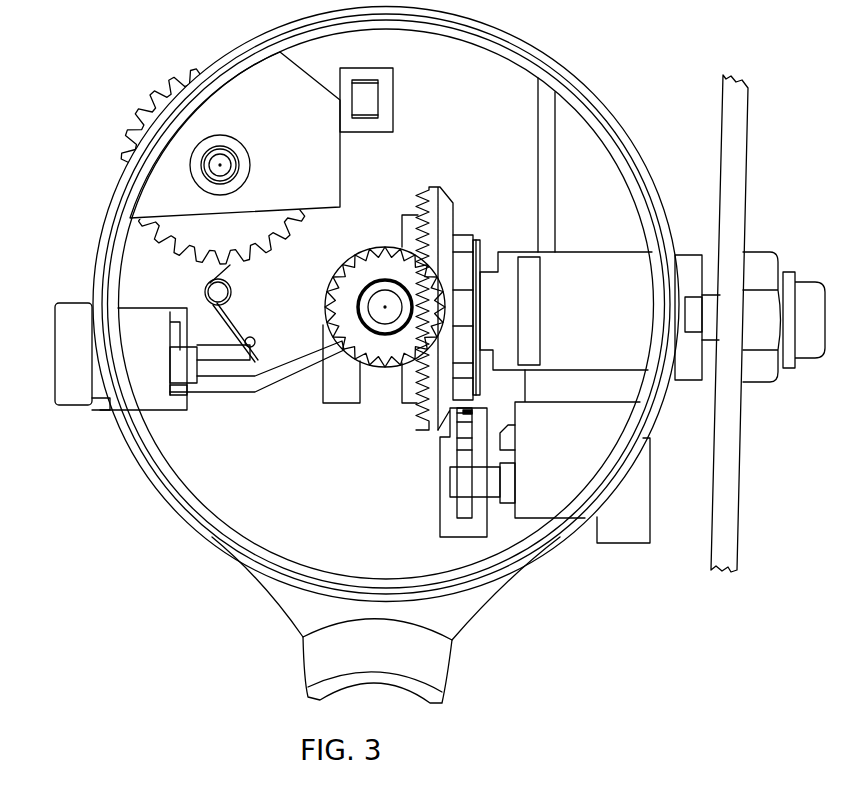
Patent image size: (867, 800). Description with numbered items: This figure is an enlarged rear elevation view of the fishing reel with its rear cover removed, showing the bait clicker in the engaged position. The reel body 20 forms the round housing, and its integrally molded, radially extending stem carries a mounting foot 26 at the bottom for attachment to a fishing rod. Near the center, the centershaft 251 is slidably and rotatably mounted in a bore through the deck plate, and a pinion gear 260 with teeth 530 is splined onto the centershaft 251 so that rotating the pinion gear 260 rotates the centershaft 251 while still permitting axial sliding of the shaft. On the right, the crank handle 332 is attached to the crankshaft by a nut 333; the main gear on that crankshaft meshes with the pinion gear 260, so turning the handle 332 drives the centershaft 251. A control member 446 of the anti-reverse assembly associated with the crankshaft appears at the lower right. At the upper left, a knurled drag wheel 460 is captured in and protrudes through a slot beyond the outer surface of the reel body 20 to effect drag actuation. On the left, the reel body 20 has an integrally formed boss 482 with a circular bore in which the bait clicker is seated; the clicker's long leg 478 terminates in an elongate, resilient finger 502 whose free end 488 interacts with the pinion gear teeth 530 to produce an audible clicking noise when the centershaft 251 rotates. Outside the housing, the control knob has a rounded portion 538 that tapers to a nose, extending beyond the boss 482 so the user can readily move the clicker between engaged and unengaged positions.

The reel body 20 is at (208, 537).
The mounting foot 26 is at (375, 686).
The centershaft 251 is at (385, 312).
The pinion gear 260 is at (375, 270).
The handle 332 is at (738, 125).
The nut 333 is at (812, 293).
The control member 446 is at (635, 527).
The drag wheel 460 is at (166, 80).
The long leg 478 is at (226, 388).
The boss 482 is at (97, 402).
The free end 488 is at (338, 340).
The resilient finger 502 is at (262, 390).
The teeth 530 is at (387, 250).
The rounded portion 538 is at (77, 312).